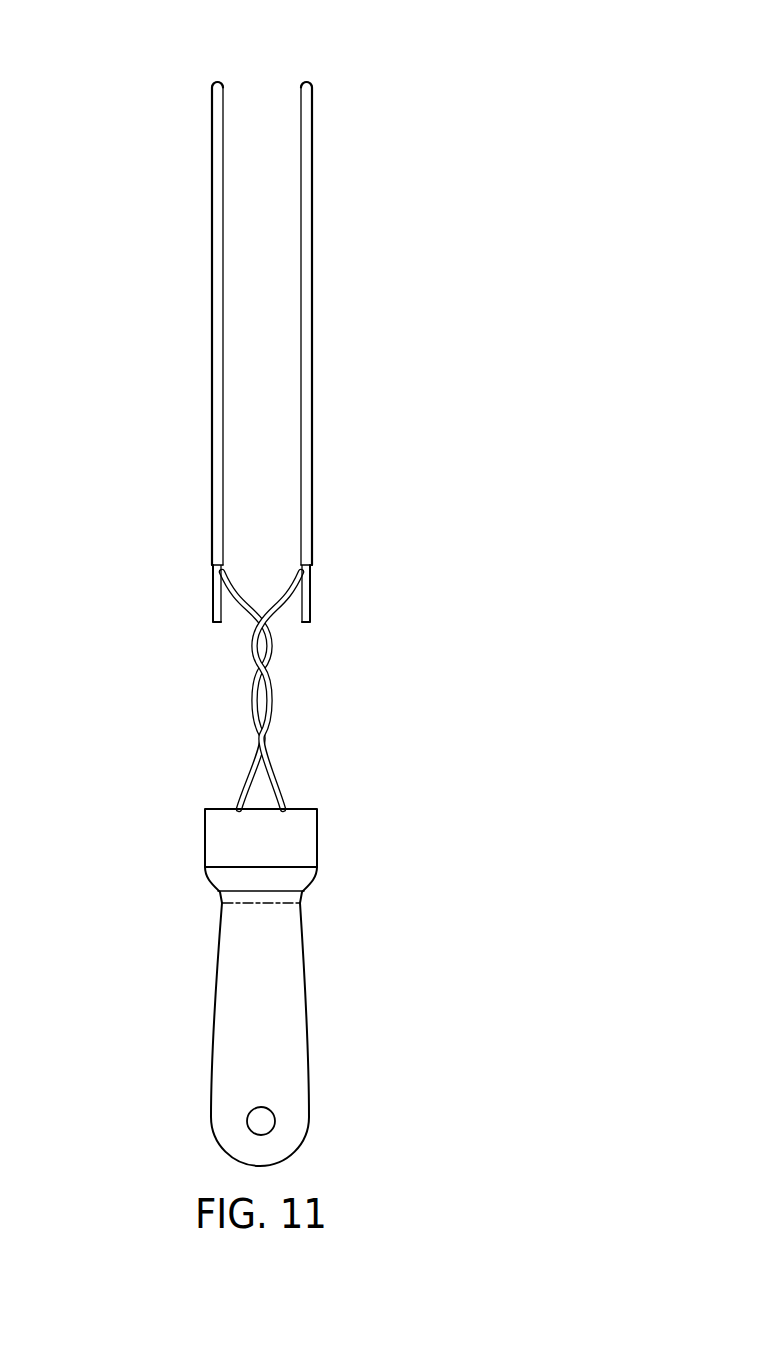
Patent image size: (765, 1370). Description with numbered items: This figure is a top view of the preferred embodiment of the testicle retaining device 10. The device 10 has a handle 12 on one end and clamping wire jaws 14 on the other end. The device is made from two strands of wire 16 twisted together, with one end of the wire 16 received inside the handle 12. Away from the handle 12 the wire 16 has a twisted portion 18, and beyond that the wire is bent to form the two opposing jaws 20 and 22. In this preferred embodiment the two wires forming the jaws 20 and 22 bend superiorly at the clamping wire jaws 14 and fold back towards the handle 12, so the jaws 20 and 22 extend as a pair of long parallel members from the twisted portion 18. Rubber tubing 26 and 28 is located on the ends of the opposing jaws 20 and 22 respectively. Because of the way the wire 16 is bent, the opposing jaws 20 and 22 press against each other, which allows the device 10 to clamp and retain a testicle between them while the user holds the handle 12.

The testicle retaining device 10 is at (395, 170).
The handle 12 is at (305, 1003).
The clamping wire jaws 14 is at (260, 284).
The wire 16 is at (280, 775).
The twisted portion 18 is at (246, 764).
The opposing jaw 20 is at (212, 313).
The opposing jaw 22 is at (312, 313).
The rubber tubing 26 is at (212, 425).
The rubber tubing 28 is at (312, 425).